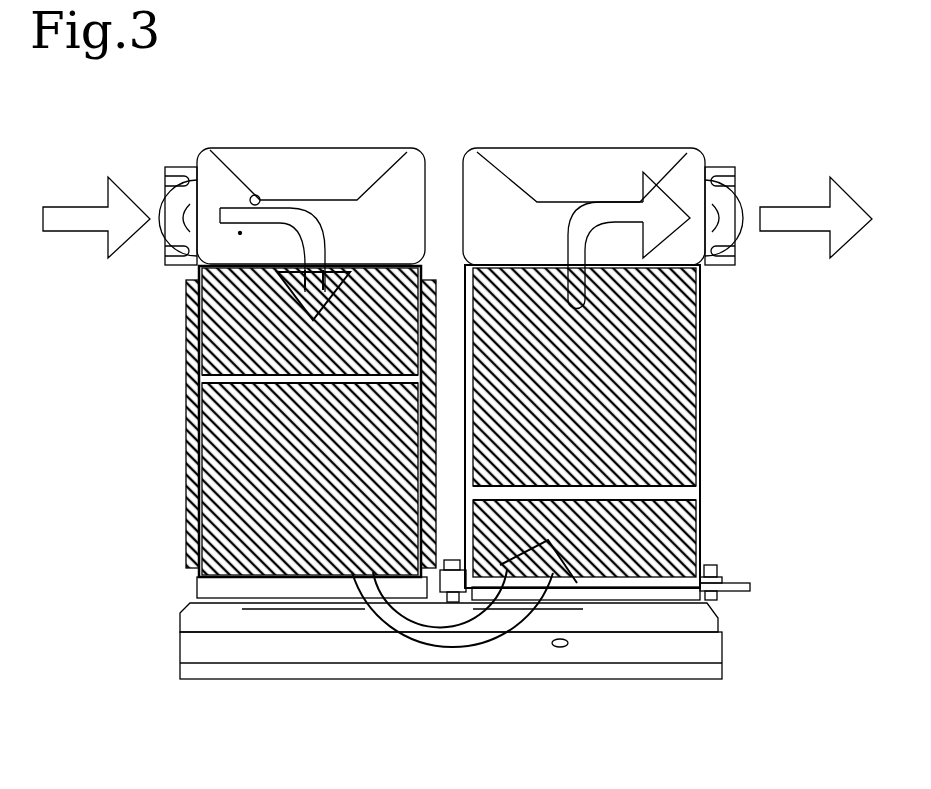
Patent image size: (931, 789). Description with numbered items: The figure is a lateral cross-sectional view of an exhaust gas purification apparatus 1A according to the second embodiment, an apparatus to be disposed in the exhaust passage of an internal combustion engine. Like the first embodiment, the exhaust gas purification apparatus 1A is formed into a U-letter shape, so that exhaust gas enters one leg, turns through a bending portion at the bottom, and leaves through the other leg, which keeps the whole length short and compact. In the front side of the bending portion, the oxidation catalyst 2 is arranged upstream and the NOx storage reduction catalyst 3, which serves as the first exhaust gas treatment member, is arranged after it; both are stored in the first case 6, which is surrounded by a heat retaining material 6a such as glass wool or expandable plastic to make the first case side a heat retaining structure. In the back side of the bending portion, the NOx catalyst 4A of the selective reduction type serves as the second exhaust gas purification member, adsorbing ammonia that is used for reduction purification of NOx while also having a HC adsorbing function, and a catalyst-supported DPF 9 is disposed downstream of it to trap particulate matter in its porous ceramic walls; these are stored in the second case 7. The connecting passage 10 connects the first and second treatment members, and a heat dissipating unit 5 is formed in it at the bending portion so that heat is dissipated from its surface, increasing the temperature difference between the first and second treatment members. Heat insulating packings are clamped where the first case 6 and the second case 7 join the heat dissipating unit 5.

The exhaust gas purification apparatus 1A is at (654, 130).
The oxidation catalyst 2 is at (218, 318).
The NOx storage reduction catalyst 3 is at (218, 480).
The NOx catalyst of the selective reduction type 4A is at (665, 553).
The heat dissipating unit 5 is at (385, 680).
The first case 6 is at (195, 432).
The heat retaining material 6a is at (199, 387).
The second case 7 is at (702, 494).
The catalyst-supported DPF 9 is at (662, 405).
The connecting passage 10 is at (326, 643).